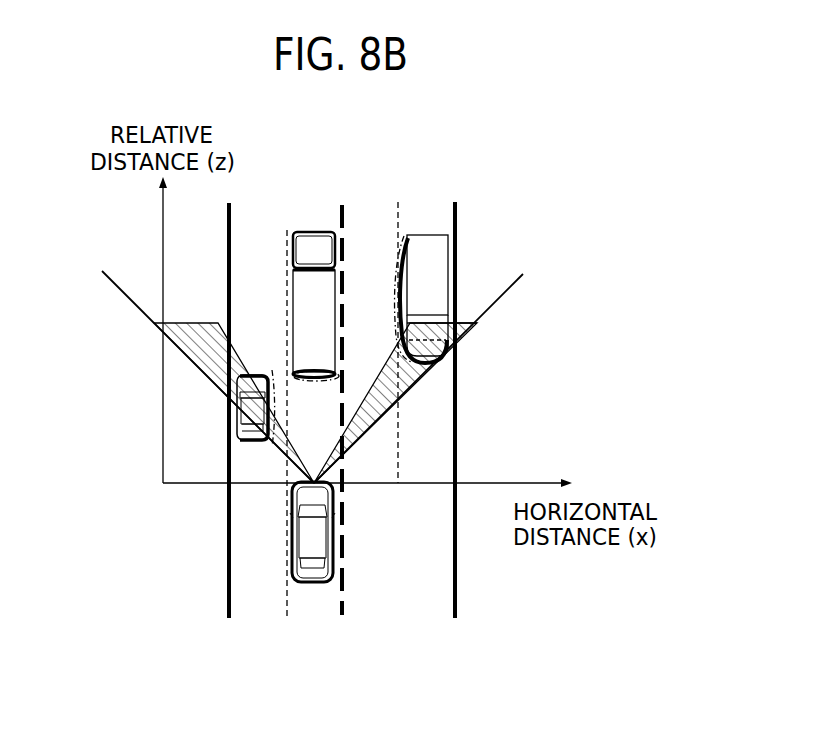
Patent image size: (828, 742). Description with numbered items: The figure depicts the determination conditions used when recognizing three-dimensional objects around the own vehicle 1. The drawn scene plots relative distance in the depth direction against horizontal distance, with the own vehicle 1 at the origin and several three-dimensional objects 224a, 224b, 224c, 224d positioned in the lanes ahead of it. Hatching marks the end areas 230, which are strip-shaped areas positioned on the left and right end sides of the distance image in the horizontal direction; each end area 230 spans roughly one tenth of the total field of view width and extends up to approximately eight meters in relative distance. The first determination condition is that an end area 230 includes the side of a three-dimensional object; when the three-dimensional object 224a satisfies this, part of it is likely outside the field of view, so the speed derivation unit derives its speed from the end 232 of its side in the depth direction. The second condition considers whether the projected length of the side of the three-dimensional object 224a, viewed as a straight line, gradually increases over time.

The own vehicle 1 is at (318, 585).
The three-dimensional object 224a is at (267, 444).
The three-dimensional object 224b is at (322, 380).
The three-dimensional object 224c is at (405, 240).
The three-dimensional object 224d is at (502, 353).
The end area 230 is at (205, 306).
The end of the side of the three-dimensional object 232 is at (258, 372).